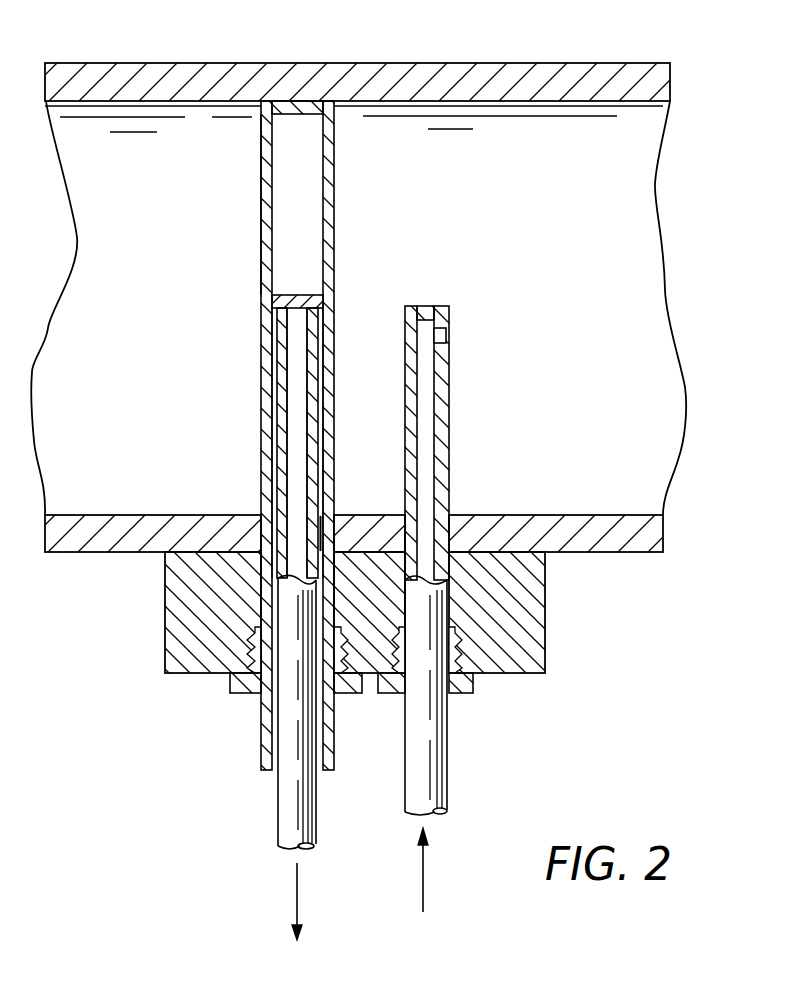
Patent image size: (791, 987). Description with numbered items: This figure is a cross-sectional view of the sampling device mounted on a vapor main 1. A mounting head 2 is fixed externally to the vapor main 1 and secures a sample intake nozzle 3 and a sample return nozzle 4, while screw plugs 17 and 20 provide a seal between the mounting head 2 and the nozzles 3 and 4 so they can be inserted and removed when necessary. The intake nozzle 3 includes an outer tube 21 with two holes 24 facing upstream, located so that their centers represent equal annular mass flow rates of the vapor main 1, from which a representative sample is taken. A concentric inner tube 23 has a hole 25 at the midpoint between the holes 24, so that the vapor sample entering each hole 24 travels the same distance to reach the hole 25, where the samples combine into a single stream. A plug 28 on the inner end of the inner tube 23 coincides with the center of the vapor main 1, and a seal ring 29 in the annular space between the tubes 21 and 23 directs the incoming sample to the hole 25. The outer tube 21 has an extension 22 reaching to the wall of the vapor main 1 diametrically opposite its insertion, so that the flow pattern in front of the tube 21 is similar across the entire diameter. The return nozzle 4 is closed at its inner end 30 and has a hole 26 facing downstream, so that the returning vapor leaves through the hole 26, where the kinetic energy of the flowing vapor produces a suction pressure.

The vapor main 1 is at (212, 64).
The mounting head 2 is at (165, 632).
The sample intake nozzle 3 is at (336, 195).
The sample return nozzle 4 is at (454, 432).
The screw plug 17 is at (238, 692).
The screw plug 20 is at (470, 693).
The outer tube 21 is at (277, 343).
The extension 22 is at (262, 173).
The inner tube 23 is at (285, 803).
The holes 24 is at (274, 395).
The hole 25 is at (283, 455).
The hole 26 is at (446, 343).
The plug 28 is at (290, 295).
The seal ring 29 is at (318, 518).
The inner end 30 is at (427, 306).